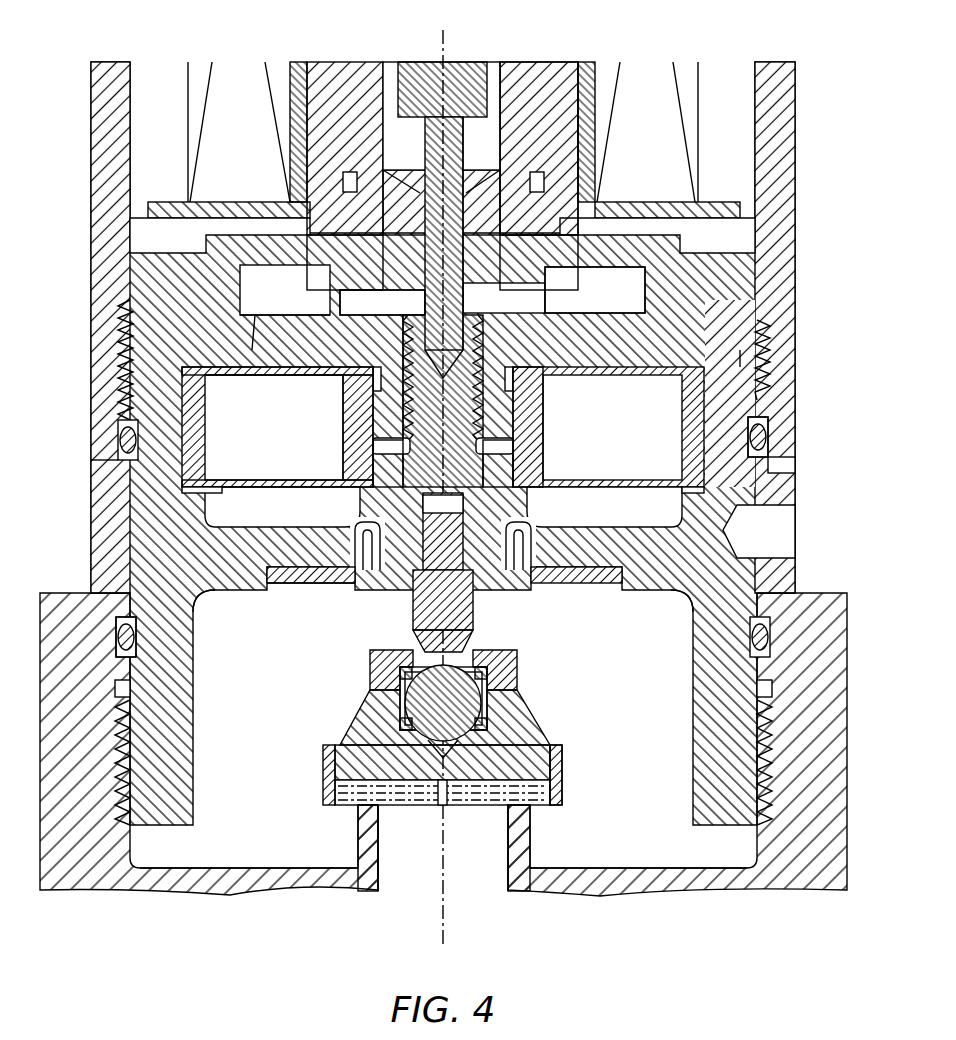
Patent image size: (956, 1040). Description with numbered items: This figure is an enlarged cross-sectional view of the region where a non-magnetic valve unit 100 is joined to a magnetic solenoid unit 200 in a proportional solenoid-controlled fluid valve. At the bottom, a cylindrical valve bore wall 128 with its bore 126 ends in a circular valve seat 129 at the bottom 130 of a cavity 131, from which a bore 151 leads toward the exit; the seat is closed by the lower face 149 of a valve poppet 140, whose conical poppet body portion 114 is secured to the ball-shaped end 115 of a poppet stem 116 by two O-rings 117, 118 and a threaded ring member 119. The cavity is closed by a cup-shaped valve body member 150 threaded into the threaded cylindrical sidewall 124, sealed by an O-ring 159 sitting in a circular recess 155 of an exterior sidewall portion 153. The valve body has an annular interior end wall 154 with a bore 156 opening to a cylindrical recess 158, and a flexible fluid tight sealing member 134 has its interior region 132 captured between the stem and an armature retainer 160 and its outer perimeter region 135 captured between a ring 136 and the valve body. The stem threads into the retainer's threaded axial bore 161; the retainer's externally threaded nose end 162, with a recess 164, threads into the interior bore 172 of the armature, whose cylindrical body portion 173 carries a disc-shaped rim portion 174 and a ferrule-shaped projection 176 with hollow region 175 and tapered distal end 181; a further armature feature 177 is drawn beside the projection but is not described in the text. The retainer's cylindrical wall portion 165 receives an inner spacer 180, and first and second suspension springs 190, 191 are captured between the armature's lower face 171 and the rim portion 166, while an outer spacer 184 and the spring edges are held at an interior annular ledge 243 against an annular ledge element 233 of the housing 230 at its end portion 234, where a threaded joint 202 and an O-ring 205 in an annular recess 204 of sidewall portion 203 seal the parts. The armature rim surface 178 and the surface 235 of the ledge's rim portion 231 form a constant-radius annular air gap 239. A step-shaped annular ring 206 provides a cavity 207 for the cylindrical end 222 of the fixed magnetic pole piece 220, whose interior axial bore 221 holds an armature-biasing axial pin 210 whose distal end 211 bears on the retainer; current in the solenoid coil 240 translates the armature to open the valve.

The valve unit 100 is at (848, 684).
The poppet body portion 114 is at (540, 720).
The ball-shaped end 115 is at (415, 700).
The poppet stem 116 is at (475, 622).
The O-ring 117 is at (405, 736).
The O-ring 118 is at (410, 665).
The threaded ring member 119 is at (520, 670).
The threaded cylindrical sidewall 124 is at (775, 760).
The cylindrical bore 126 is at (420, 888).
The cylindrical valve bore wall 128 is at (378, 853).
The valve seat 129 is at (508, 814).
The bottom of cavity 130 is at (210, 868).
The cavity 131 is at (597, 755).
The interior region of sealing member 132 is at (413, 582).
The flexible fluid tight sealing member 134 is at (338, 584).
The outer perimeter region of sealing member 135 is at (292, 584).
The ring 136 is at (258, 598).
The valve poppet 140 is at (322, 772).
The lower face of valve poppet 149 is at (560, 803).
The valve body member 150 is at (800, 572).
The cylindrical bore 151 is at (612, 872).
The exterior sidewall portion 153 is at (116, 665).
The annular interior end wall 154 is at (672, 600).
The circular recess 155 is at (772, 627).
The bore 156 is at (522, 590).
The cylindrical recess 158 is at (658, 478).
The O-ring 159 is at (145, 660).
The armature retainer 160 is at (360, 494).
The threaded axial bore 161 is at (495, 504).
The externally threaded nose end 162 is at (345, 456).
The recess 164 is at (464, 350).
The cylindrical wall portion 165 is at (543, 456).
The rim portion 166 is at (656, 528).
The lower face of armature 171 is at (545, 385).
The interior bore 172 is at (545, 432).
The cylindrical body portion 173 is at (345, 426).
The disc-shaped rim portion 174 is at (311, 375).
The interior recess of projection 175 is at (555, 302).
The ferrule-shaped projection 176 is at (342, 302).
The spindle guide 177 is at (555, 302).
The opposing surface of rim portion 178 is at (248, 320).
The inner spring-retaining spacer 180 is at (545, 412).
The distal end of projection 181 is at (345, 292).
The outer spring-retaining spacer 184 is at (205, 442).
The first suspension spring 190 is at (265, 376).
The second suspension spring 191 is at (265, 480).
The solenoid unit 200 is at (800, 193).
The threaded joint 202 is at (775, 347).
The sidewall portion 203 is at (772, 484).
The annular recess 204 is at (770, 428).
The O-ring 205 is at (770, 440).
The step-shaped annular ring 206 is at (685, 254).
The cavity 207 is at (546, 184).
The armature-biasing axial pin 210 is at (449, 62).
The distal end of pin 211 is at (421, 340).
The fixed magnetic pole piece 220 is at (350, 80).
The interior axial bore 221 is at (497, 72).
The cylindrical end of pole piece 222 is at (547, 270).
The magnetic housing 230 is at (91, 272).
The rim portion 231 is at (118, 330).
The annular ledge element 233 is at (196, 262).
The end portion of housing 234 is at (796, 388).
The opposing surface of rim portion 231 235 is at (252, 348).
The annular air gap 239 is at (230, 376).
The solenoid coil 240 is at (645, 72).
The interior annular ledge 243 is at (208, 492).